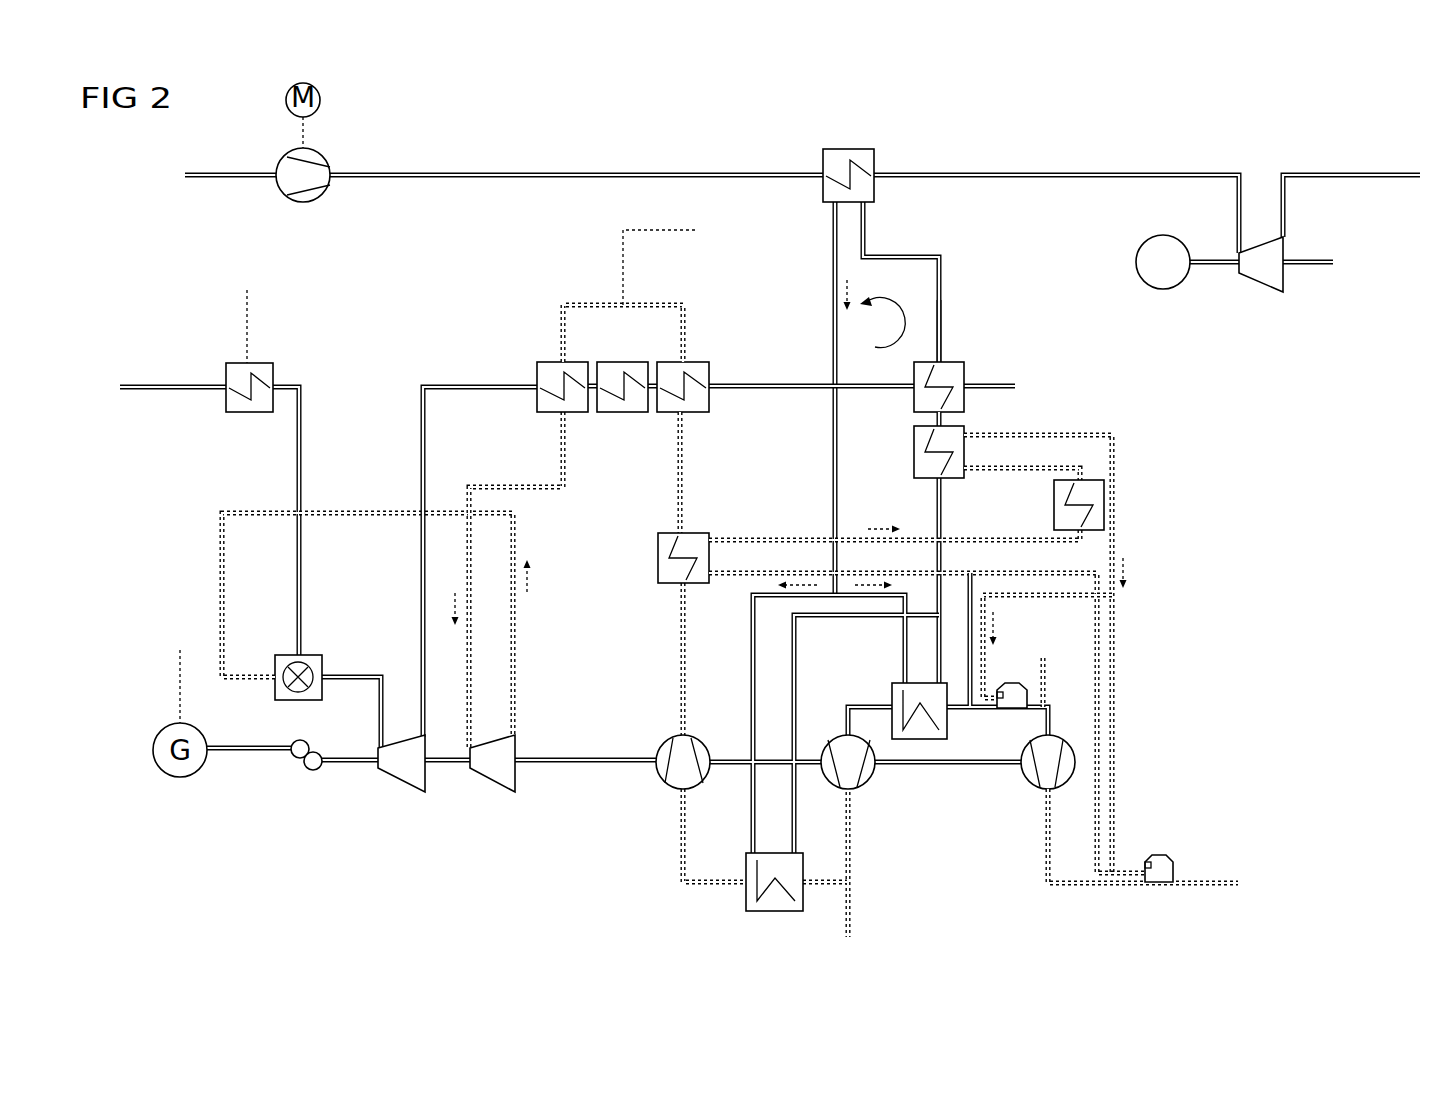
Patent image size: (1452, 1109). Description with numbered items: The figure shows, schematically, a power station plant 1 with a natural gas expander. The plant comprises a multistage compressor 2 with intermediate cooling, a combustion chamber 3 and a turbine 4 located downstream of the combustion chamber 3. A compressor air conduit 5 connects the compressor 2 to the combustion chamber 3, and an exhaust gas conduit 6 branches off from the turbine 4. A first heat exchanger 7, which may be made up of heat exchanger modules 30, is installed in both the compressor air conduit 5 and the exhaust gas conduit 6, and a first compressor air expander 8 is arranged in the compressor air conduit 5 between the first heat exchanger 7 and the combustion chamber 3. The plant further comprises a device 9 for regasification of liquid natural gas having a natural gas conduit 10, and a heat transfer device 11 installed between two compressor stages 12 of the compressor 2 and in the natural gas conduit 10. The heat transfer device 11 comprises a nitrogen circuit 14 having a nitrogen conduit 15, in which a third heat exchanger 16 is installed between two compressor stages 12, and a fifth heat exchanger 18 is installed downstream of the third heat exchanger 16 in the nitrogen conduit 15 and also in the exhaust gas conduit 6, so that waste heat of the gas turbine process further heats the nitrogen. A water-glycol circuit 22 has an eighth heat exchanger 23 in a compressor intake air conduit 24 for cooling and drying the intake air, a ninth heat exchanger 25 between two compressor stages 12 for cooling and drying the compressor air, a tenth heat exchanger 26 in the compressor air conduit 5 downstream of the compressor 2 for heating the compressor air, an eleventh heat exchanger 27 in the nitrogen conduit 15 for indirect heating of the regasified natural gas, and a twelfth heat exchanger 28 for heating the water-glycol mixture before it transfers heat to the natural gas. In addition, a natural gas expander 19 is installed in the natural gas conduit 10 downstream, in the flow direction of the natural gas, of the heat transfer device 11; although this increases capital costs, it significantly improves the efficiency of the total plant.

The power station plant 1 is at (1386, 303).
The multistage compressor 2 is at (932, 781).
The combustion chamber 3 is at (316, 655).
The turbine 4 is at (406, 783).
The compressor air conduit 5 is at (349, 512).
The exhaust gas conduit 6 is at (443, 385).
The first heat exchanger 7 is at (552, 360).
The first compressor air expander 8 is at (493, 783).
The device for regasification of liquid natural gas 9 is at (831, 133).
The natural gas conduit 10 is at (592, 173).
The heat transfer device 11 is at (957, 512).
The compressor stages 12 is at (671, 790).
The nitrogen circuit 14 is at (893, 300).
The nitrogen conduit 15 is at (945, 297).
The third heat exchanger 16 is at (925, 740).
The fifth heat exchanger 18 is at (966, 378).
The natural gas expander 19 is at (1258, 284).
The water-glycol circuit 22 is at (1113, 458).
The eighth heat exchanger 23 is at (1165, 855).
The compressor intake air conduit 24 is at (1210, 886).
The ninth heat exchanger 25 is at (1015, 683).
The tenth heat exchanger 26 is at (658, 547).
The eleventh heat exchanger 27 is at (914, 450).
The twelfth heat exchanger 28 is at (1105, 508).
The heat exchanger modules 30 is at (700, 360).